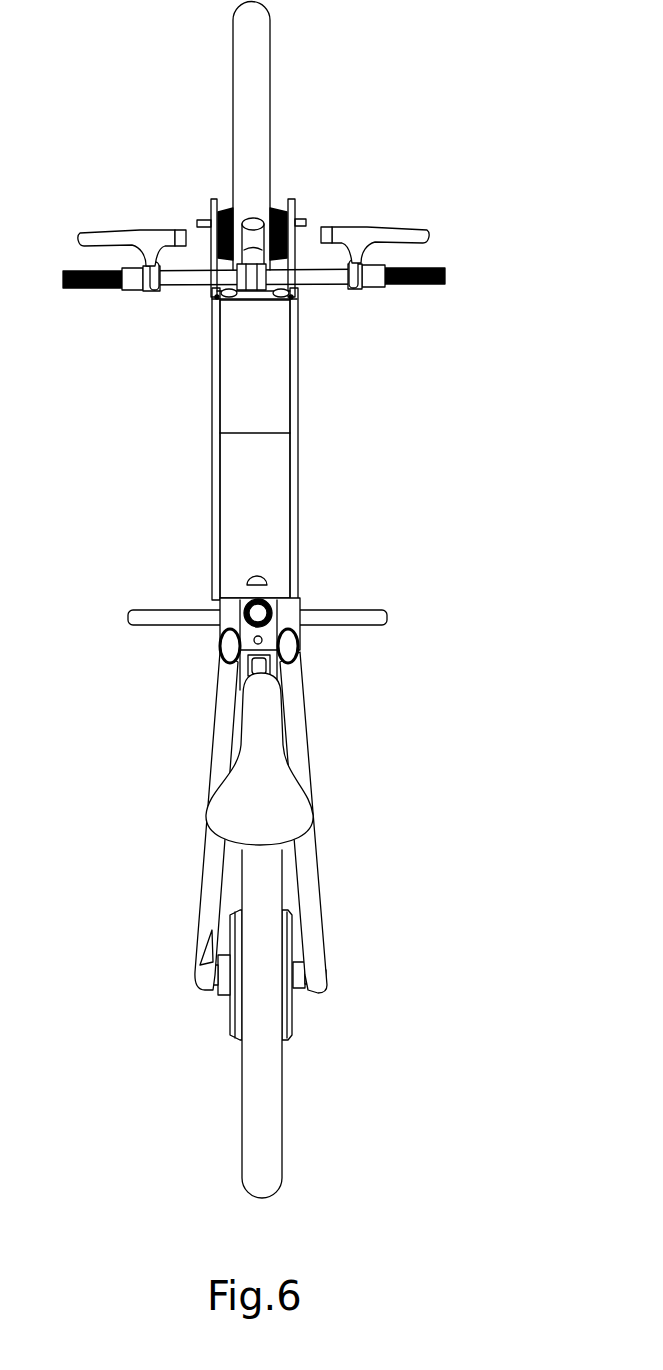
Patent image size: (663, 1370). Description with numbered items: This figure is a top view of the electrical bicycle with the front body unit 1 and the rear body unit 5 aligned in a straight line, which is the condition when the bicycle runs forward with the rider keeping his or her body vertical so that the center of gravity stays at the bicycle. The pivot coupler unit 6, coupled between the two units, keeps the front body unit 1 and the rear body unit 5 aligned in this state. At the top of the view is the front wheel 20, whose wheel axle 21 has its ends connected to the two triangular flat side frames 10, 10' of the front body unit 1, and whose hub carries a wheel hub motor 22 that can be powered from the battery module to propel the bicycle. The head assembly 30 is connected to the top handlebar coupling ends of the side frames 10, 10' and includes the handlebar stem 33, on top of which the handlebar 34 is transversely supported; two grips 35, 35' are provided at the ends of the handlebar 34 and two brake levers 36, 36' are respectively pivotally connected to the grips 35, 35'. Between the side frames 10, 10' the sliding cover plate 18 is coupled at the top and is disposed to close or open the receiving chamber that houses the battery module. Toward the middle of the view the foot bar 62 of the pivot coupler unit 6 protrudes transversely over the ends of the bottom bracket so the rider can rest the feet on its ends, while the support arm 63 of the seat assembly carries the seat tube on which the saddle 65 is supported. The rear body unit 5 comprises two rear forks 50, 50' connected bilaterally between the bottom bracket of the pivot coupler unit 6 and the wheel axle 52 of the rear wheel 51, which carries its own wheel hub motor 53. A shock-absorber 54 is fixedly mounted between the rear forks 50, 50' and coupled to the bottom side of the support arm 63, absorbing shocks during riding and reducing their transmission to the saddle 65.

The front body unit 1 is at (282, 444).
The rear body unit 5 is at (273, 867).
The pivot coupler unit 6 is at (240, 587).
The side frame 10 is at (180, 444).
The side frame 10' is at (334, 444).
The sliding cover plate 18 is at (285, 415).
The front wheel 20 is at (262, 72).
The wheel axle 21 is at (200, 218).
The wheel hub motor 22 is at (230, 180).
The head assembly 30 is at (288, 174).
The handlebar stem 33 is at (281, 205).
The handlebar 34 is at (332, 286).
The grip 35 is at (398, 297).
The grip 35' is at (108, 304).
The brake lever 36 is at (379, 209).
The brake lever 36' is at (127, 215).
The rear fork 50 is at (183, 821).
The rear fork 50' is at (345, 822).
The rear wheel 51 is at (275, 1092).
The wheel axle 52 is at (195, 974).
The wheel hub motor 53 is at (228, 1012).
The shock-absorber 54 is at (262, 665).
The foot bar 62 is at (365, 610).
The support arm 63 is at (275, 620).
The saddle 65 is at (272, 750).